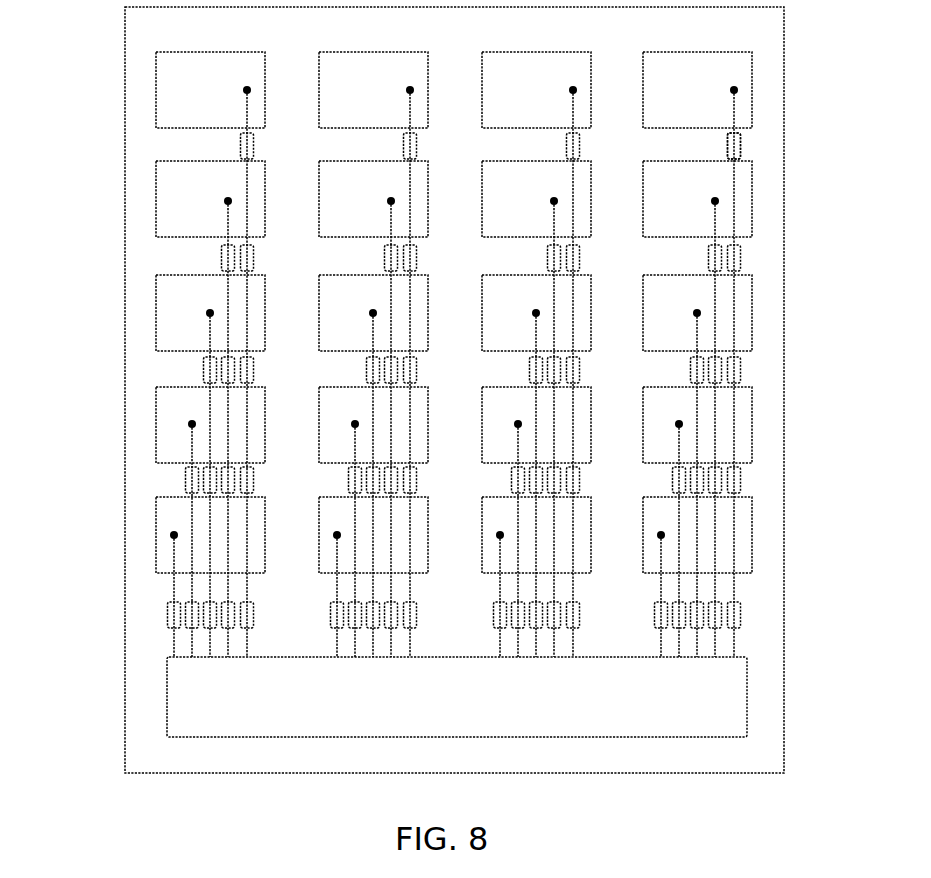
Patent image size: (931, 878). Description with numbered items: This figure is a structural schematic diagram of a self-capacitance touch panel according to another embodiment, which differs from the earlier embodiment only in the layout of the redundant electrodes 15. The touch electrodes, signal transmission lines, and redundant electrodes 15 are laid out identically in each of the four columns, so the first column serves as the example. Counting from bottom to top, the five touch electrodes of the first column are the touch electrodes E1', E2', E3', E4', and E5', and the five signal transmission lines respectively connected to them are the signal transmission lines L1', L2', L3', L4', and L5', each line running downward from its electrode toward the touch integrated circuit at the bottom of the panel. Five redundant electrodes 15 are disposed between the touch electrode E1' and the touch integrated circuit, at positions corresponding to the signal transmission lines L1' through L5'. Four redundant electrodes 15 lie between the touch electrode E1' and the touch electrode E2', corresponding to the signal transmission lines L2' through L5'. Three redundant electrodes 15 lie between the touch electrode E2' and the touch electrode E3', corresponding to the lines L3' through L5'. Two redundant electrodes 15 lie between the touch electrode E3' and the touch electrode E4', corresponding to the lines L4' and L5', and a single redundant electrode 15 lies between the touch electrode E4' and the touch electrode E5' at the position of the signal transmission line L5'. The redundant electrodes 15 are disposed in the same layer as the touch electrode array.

The touch electrode E5' is at (161, 64).
The signal transmission line L5' is at (158, 361).
The touch electrode E4' is at (159, 181).
The signal transmission line L4' is at (146, 412).
The touch electrode E3' is at (158, 293).
The signal transmission line L3' is at (137, 476).
The touch electrode E2' is at (160, 413).
The signal transmission line L2' is at (128, 535).
The touch electrode E1' is at (158, 527).
The signal transmission line L1' is at (119, 594).
The redundant electrode 15 is at (733, 153).